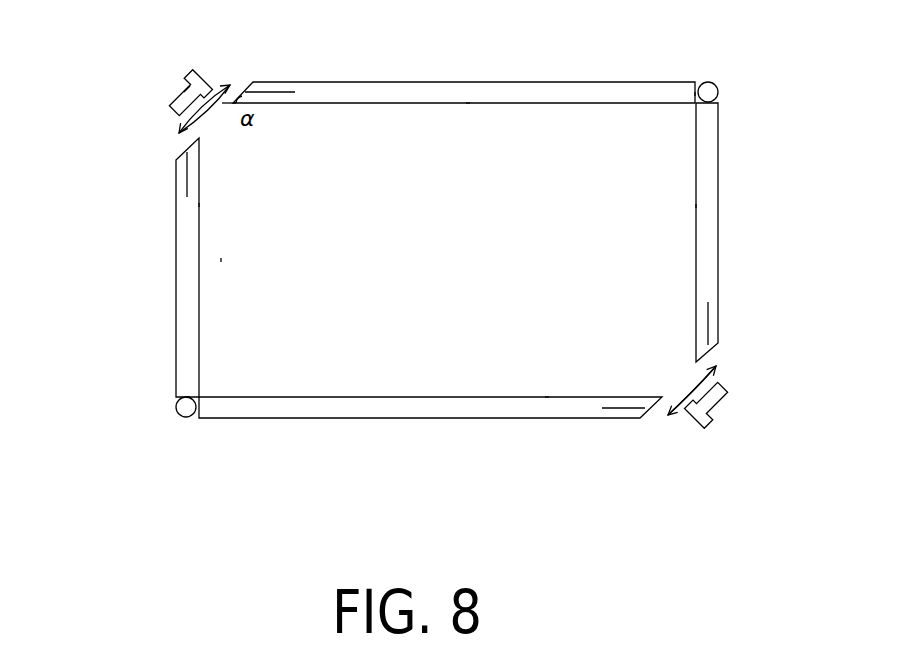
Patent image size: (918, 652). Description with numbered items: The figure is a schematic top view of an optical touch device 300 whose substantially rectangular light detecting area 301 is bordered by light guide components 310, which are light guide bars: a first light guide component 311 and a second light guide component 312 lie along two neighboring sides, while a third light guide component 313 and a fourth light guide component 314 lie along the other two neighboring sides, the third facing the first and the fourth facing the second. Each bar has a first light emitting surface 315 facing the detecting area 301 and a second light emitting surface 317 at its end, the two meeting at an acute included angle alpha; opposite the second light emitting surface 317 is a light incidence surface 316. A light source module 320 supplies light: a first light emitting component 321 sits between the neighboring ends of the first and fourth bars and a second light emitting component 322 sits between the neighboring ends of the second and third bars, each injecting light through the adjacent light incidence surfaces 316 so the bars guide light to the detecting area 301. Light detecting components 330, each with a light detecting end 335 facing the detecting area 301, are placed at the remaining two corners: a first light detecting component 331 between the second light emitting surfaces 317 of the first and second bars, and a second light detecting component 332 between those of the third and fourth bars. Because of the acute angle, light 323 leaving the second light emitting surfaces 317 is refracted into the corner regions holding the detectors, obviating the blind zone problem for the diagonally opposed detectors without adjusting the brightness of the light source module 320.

The optical touch device 300 is at (786, 485).
The light detecting area 301 is at (221, 261).
The light guide components 310 is at (512, 258).
The first light guide component 311 is at (364, 84).
The second light guide component 312 is at (188, 333).
The third light guide component 313 is at (432, 419).
The fourth light guide component 314 is at (712, 165).
The first light emitting surface 315 is at (467, 106).
The light incidence surface 316 is at (692, 92).
The second light emitting surface 317 is at (246, 89).
The light source module 320 is at (442, 251).
The first light emitting component 321 is at (715, 92).
The second light emitting component 322 is at (178, 407).
The light 323 is at (285, 92).
The light detecting components 330 is at (437, 249).
The first light detecting component 331 is at (169, 104).
The second light detecting component 332 is at (724, 406).
The light detecting end 335 is at (183, 93).